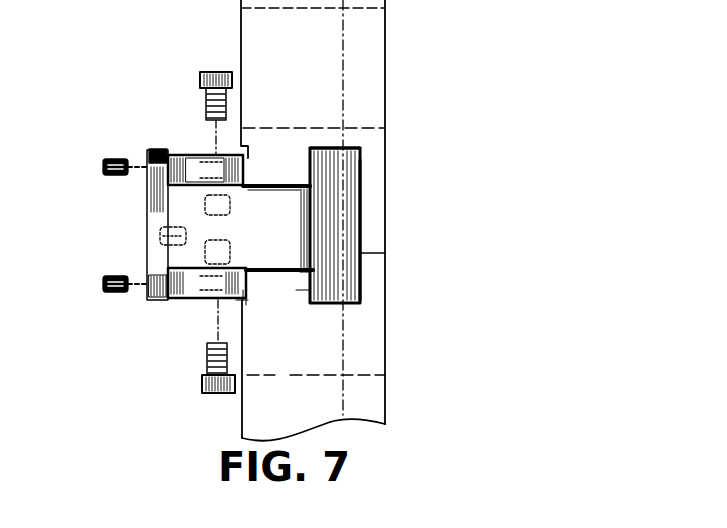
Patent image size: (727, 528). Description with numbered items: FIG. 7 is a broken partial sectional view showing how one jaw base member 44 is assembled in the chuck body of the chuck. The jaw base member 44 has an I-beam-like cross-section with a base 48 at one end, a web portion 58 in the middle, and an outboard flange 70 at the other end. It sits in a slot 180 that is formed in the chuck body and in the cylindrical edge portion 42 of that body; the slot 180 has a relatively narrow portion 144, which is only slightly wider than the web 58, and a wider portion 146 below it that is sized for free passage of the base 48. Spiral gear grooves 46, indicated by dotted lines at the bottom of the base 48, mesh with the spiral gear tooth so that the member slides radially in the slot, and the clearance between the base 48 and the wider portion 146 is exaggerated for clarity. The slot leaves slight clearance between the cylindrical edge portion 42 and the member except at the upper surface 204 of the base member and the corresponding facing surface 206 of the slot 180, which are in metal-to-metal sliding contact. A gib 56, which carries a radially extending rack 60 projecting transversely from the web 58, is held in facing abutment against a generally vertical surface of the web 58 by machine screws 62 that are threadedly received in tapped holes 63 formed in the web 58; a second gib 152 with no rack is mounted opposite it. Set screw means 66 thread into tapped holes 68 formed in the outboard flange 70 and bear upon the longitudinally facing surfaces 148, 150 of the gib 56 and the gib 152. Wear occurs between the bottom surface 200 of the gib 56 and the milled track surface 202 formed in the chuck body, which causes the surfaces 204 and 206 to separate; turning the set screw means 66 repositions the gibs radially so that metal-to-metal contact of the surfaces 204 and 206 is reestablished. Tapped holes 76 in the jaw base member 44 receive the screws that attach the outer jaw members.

The cylindrical edge portion 42 is at (312, 37).
The jaw base member 44 is at (120, 204).
The spiral gear grooves 46 is at (360, 292).
The base 48 is at (353, 230).
The gib 56 is at (238, 310).
The web portion 58 is at (282, 183).
The rack 60 is at (190, 298).
The machine screws 62 is at (203, 74).
The tapped holes 63 is at (226, 195).
The set screw means 66 is at (106, 162).
The tapped holes 68 is at (159, 149).
The outboard flange 70 is at (158, 300).
The tapped holes 76 is at (158, 238).
The narrow portion 144 is at (297, 186).
The wider portion 146 is at (338, 150).
The longitudinally facing surface 148 is at (178, 300).
The longitudinally facing surface 150 is at (205, 153).
The gib 152 is at (202, 153).
The slot 180 is at (283, 172).
The bottom surface 200 is at (240, 290).
The milled track surface 202 is at (238, 306).
The upper surface 204 is at (303, 298).
The facing surface 206 is at (296, 300).